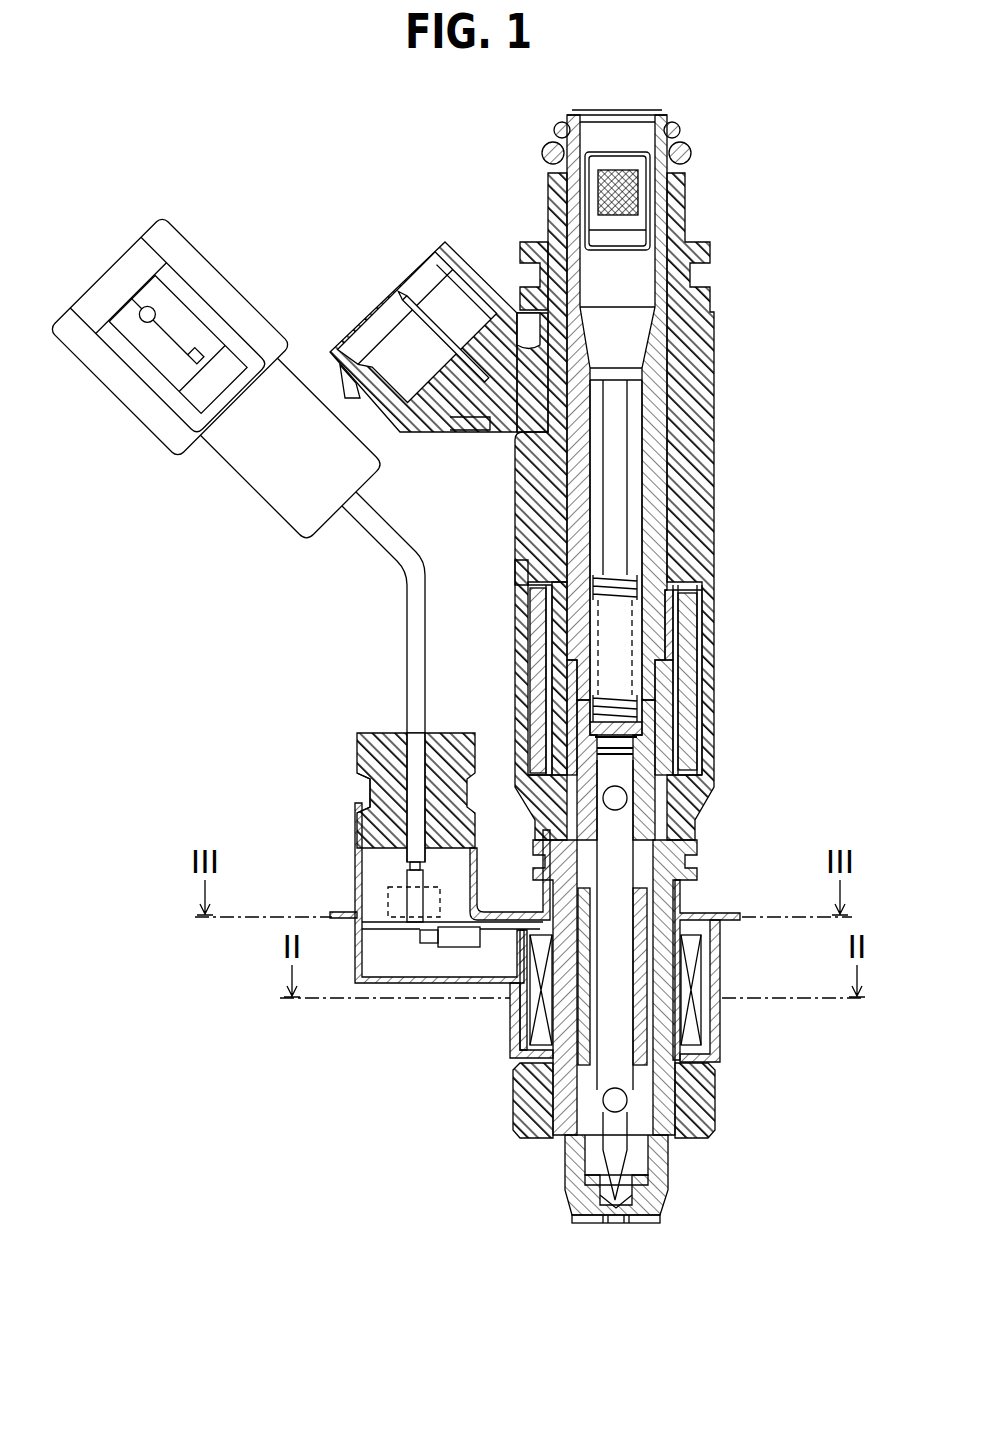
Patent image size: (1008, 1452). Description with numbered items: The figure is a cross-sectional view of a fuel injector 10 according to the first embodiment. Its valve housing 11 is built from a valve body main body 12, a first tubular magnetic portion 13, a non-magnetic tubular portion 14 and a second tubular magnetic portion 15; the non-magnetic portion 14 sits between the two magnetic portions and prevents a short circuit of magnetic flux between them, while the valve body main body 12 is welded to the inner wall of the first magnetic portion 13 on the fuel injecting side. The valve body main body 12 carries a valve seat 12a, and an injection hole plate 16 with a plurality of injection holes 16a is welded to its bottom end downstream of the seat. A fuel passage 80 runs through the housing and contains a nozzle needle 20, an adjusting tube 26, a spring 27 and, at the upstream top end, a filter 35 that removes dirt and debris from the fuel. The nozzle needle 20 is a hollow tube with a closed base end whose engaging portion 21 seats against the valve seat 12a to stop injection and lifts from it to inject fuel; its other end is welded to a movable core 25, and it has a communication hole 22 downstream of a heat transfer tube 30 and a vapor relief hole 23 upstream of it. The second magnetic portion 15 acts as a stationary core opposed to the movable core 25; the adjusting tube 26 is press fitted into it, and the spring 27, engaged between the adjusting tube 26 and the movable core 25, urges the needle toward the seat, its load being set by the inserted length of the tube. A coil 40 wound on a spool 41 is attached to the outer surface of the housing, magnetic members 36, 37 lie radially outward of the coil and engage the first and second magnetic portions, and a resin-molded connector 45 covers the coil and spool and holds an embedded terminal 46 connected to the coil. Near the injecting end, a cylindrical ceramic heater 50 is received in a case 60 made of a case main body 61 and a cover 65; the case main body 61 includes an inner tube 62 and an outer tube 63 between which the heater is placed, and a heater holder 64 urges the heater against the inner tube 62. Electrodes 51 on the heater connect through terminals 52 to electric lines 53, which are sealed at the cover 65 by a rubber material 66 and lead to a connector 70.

The fuel injector 10 is at (690, 204).
The valve housing 11 is at (676, 346).
The valve body main body 12 is at (650, 1193).
The valve seat 12a is at (575, 1187).
The first tubular magnetic portion 13 is at (665, 1083).
The non-magnetic tubular portion 14 is at (690, 718).
The second tubular magnetic portion 15 is at (652, 432).
The injection hole plate 16 is at (640, 1222).
The injection holes 16a is at (606, 1222).
The nozzle needle 20 is at (640, 865).
The engaging portion 21 is at (605, 1213).
The communication hole 22 is at (605, 1100).
The vapor relief hole 23 is at (616, 800).
The movable core 25 is at (718, 750).
The adjusting tube 26 is at (641, 470).
The spring 27 is at (517, 570).
The heat transfer tube 30 is at (680, 905).
The filter 35 is at (617, 170).
The magnetic member 36 is at (705, 685).
The magnetic member 37 is at (673, 575).
The coil 40 is at (683, 617).
The spool 41 is at (676, 654).
The connector 45 is at (455, 262).
The terminal 46 is at (402, 292).
The ceramic heater 50 is at (535, 995).
The electrode 51 is at (458, 936).
The terminal 52 is at (470, 940).
The electric line 53 is at (415, 762).
The case 60 is at (503, 1050).
The case main body 61 is at (505, 1027).
The inner tube 62 is at (700, 963).
The outer tube 63 is at (720, 995).
The heater holder 64 is at (700, 1047).
The cover 65 is at (352, 838).
The rubber material 66 is at (375, 815).
The connector 70 is at (233, 490).
The fuel passage 80 is at (620, 540).